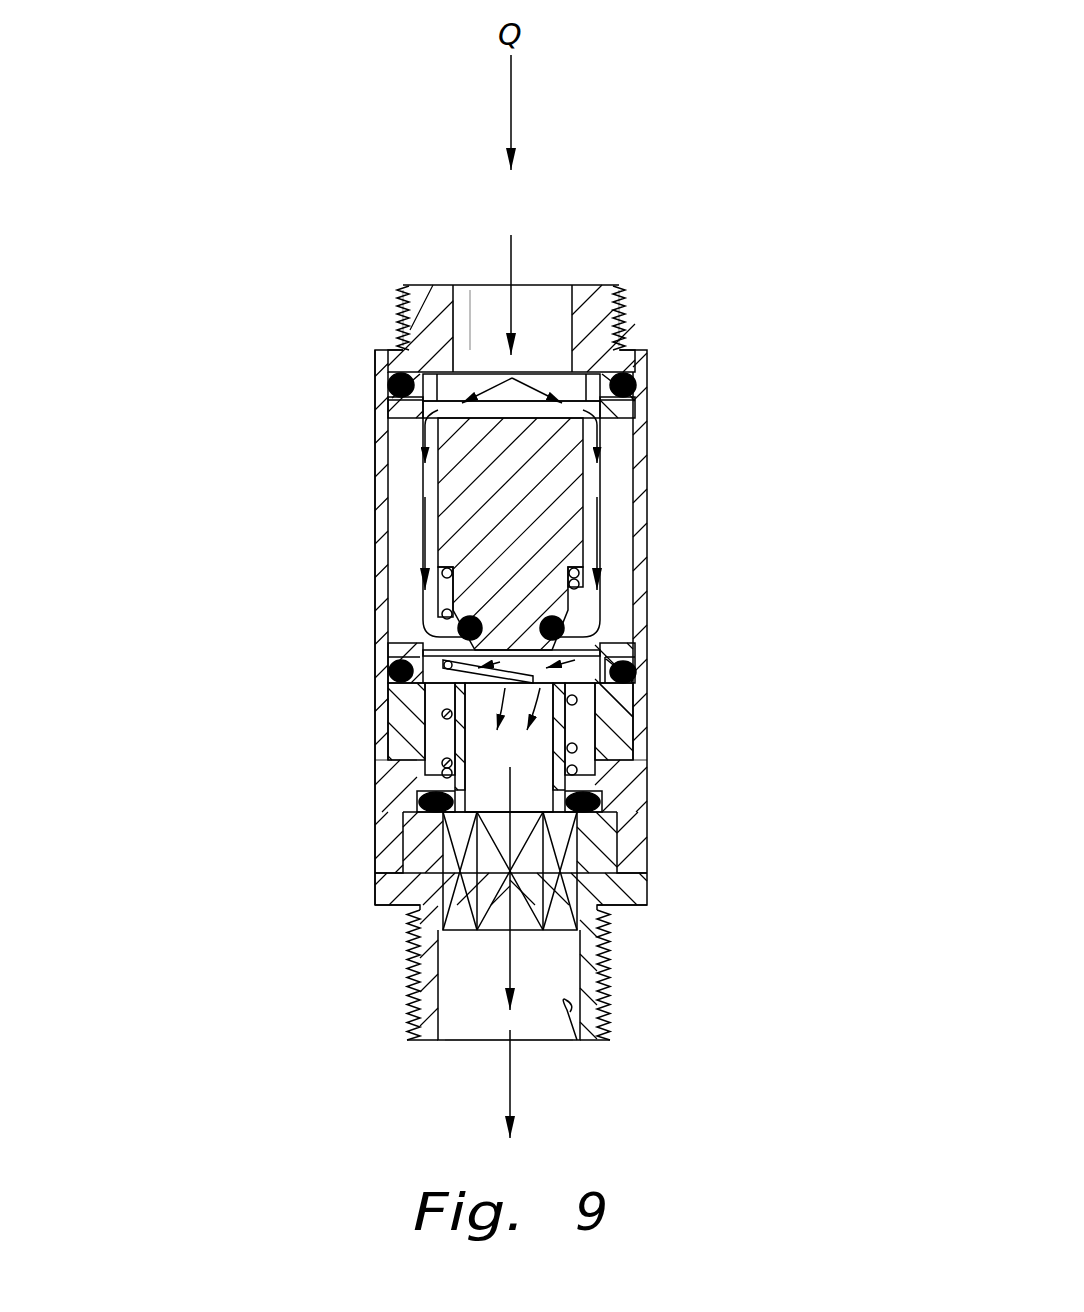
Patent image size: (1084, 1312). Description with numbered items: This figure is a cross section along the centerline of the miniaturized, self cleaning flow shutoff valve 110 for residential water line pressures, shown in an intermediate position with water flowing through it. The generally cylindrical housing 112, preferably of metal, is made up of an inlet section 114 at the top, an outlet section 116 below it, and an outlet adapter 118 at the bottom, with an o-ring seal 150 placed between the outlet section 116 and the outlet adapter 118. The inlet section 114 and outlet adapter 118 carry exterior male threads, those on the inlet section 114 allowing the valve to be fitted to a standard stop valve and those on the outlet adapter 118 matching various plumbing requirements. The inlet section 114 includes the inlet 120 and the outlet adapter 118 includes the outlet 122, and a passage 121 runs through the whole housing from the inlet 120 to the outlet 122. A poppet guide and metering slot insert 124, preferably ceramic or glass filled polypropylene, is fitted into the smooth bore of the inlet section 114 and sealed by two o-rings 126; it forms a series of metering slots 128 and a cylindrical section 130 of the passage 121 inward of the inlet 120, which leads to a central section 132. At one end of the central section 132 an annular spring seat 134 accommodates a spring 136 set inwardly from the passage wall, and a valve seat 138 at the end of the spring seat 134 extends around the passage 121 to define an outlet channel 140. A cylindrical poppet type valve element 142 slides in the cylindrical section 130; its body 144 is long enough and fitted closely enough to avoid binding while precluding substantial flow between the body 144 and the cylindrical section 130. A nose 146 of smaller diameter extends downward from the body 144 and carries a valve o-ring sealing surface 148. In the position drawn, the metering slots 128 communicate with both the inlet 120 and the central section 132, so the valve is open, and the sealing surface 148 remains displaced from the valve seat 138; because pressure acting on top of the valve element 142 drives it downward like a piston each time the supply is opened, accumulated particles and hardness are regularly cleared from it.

The flow shutoff valve 110 is at (370, 132).
The housing 112 is at (620, 290).
The inlet section 114 is at (607, 338).
The outlet section 116 is at (633, 853).
The outlet adapter 118 is at (590, 902).
The inlet 120 is at (570, 314).
The passage 121 is at (485, 342).
The outlet 122 is at (577, 1040).
The poppet guide and metering slot insert 124 is at (418, 380).
The o-ring 126 is at (640, 370).
The metering slots 128 is at (403, 568).
The cylindrical section 130 is at (583, 444).
The central section 132 is at (455, 678).
The annular spring seat 134 is at (447, 770).
The spring 136 is at (447, 713).
The valve seat 138 is at (635, 680).
The outlet channel 140 is at (520, 800).
The valve element 142 is at (437, 440).
The body 144 is at (438, 492).
The nose 146 is at (440, 607).
The valve o-ring sealing surface 148 is at (570, 627).
The o-ring seal 150 is at (603, 800).